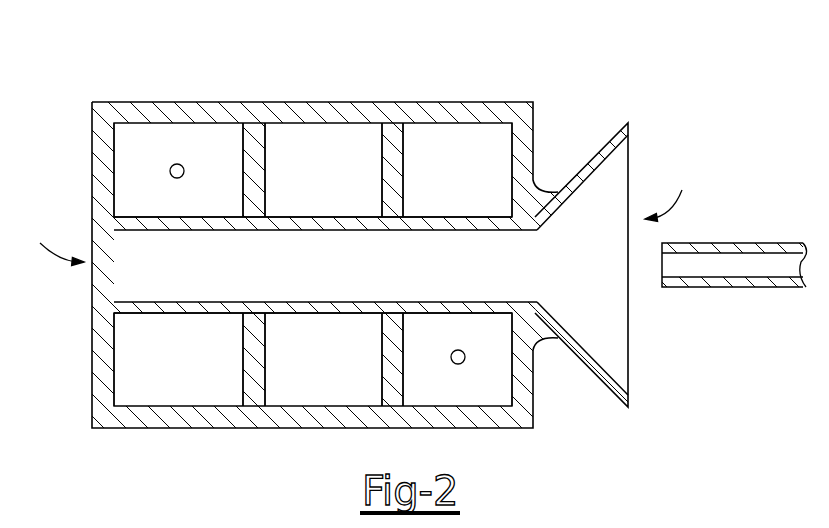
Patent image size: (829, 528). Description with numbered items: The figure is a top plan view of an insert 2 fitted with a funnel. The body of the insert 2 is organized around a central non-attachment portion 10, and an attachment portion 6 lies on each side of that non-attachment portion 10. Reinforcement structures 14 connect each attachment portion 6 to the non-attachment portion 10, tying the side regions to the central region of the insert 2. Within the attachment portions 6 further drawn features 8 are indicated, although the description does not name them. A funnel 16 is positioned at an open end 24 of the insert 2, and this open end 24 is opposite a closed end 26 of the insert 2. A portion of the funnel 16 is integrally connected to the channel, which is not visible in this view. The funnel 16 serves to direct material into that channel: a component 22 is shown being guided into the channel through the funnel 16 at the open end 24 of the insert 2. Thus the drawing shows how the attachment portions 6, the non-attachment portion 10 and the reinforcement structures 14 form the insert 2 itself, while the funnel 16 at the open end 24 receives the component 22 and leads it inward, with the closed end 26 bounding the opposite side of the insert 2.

The insert 2 is at (157, 78).
The attachment portion 6 is at (334, 179).
The heating element 8 is at (170, 168).
The non-attachment portion 10 is at (330, 280).
The reinforcement structure 14 is at (256, 138).
The funnel 16 is at (629, 130).
The component 22 is at (751, 266).
The open end 24 is at (672, 198).
The closed end 26 is at (52, 244).